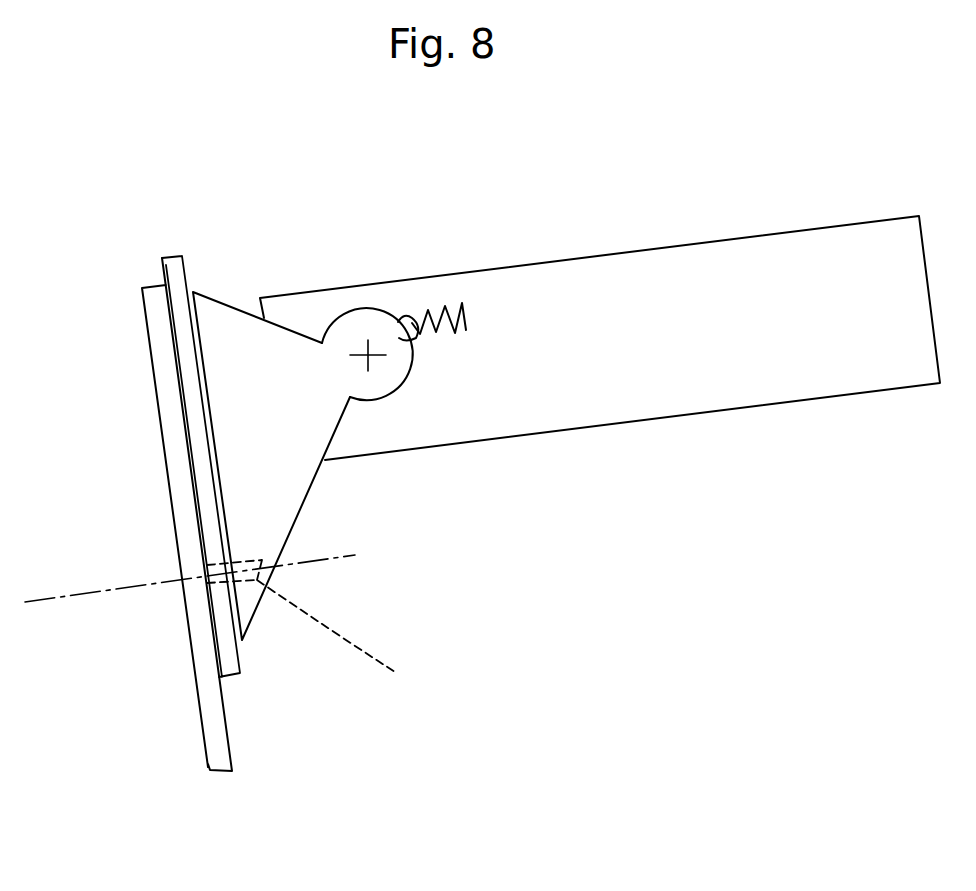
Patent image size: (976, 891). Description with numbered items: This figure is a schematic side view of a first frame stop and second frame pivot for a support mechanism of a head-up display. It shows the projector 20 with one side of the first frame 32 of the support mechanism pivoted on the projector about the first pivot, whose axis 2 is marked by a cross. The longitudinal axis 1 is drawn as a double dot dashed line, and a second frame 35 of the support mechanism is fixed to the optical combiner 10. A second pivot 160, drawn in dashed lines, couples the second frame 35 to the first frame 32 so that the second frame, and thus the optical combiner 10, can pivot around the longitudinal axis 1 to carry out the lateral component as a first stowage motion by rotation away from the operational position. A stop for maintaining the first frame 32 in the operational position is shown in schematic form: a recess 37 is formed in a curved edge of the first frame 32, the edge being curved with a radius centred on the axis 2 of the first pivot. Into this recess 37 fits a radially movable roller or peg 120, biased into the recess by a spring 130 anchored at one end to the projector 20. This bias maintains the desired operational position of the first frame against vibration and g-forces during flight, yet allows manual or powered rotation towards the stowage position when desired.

The longitudinal axis 1 is at (104, 598).
The axis of the first pivot 2 is at (368, 355).
The optical combiner 10 is at (168, 384).
The projector 20 is at (569, 320).
The first frame 32 is at (240, 357).
The second frame 35 is at (175, 268).
The recess 37 is at (398, 352).
The roller or peg 120 is at (412, 320).
The spring 130 is at (443, 302).
The second pivot 160 is at (311, 632).